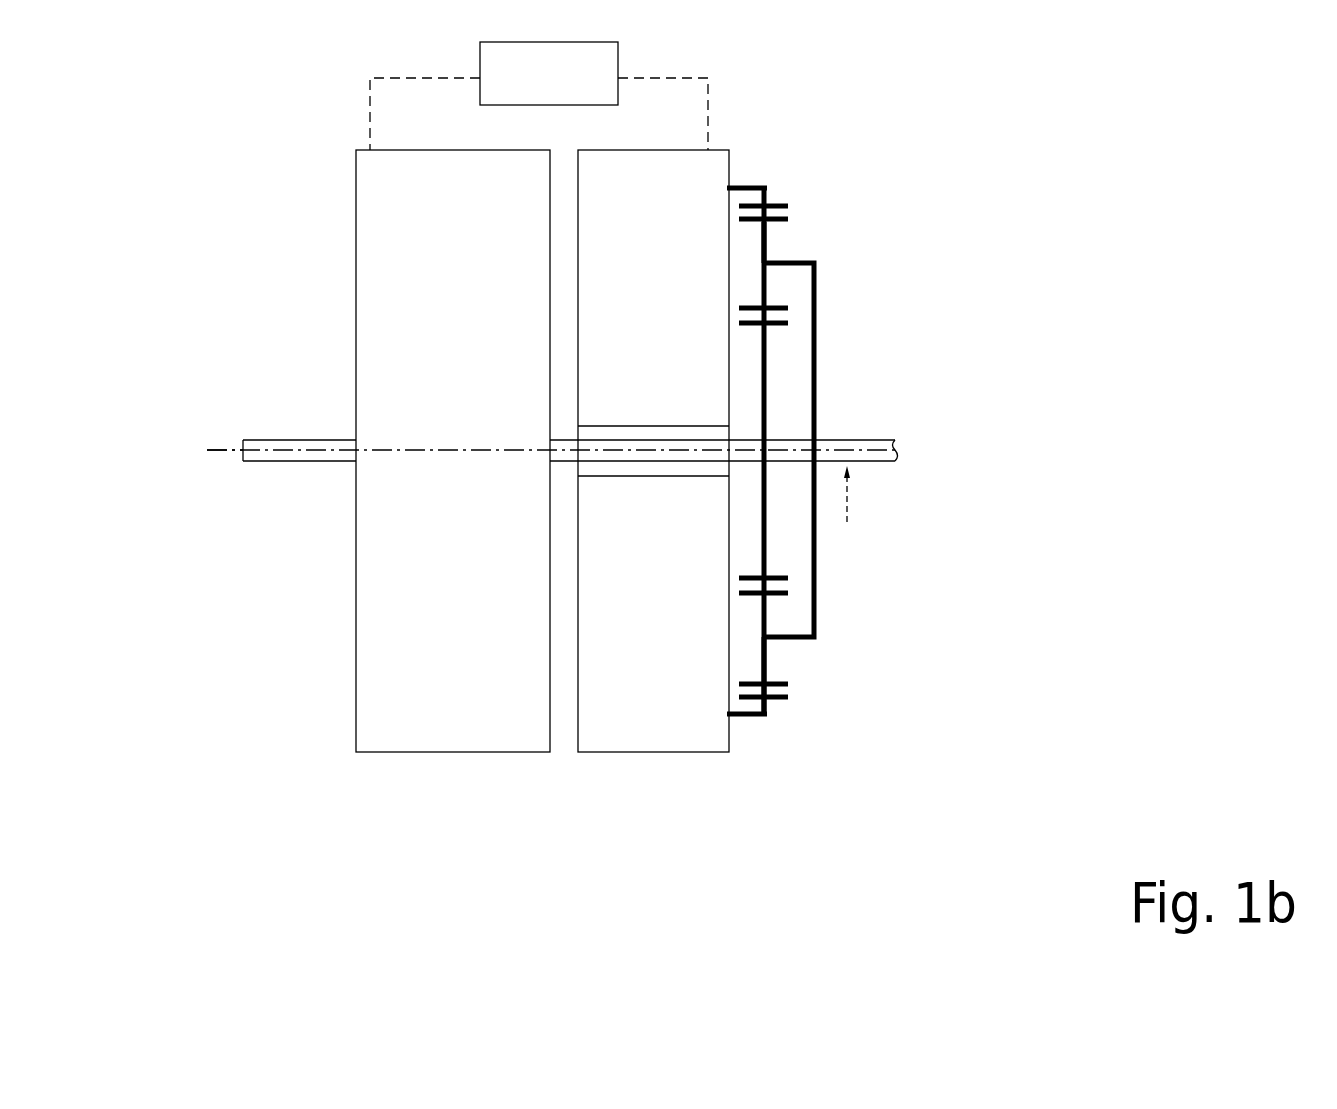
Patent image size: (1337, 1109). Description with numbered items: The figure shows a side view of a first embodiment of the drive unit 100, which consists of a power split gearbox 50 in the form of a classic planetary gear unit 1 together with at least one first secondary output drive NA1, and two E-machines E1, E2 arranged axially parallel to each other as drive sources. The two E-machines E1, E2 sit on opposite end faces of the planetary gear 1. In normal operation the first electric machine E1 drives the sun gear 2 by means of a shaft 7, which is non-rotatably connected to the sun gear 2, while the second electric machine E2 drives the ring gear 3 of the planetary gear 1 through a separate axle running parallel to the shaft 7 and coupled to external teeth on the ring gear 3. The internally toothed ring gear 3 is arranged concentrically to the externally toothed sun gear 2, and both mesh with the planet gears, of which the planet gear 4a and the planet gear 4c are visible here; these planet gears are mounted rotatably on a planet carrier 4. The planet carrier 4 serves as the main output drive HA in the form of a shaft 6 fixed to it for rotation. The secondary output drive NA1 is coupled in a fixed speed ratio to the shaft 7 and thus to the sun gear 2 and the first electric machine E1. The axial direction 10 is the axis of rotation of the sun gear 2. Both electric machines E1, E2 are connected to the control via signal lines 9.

The drive unit 100 is at (568, 385).
The signal lines 9 is at (368, 110).
The first electric machine E1 is at (453, 451).
The second electric machine E2 is at (653, 451).
The axial direction 10 is at (220, 449).
The shaft 7 is at (560, 462).
The first secondary output drive NA1 is at (257, 513).
The planetary gear unit 1 is at (828, 461).
The power split gearbox 50 is at (828, 461).
The sun gear 2 is at (767, 387).
The ring gear 3 is at (767, 193).
The planet gear 4a is at (767, 245).
The planet carrier 4 is at (815, 279).
The planet gear 4c is at (767, 659).
The shaft 6 is at (833, 440).
The main output drive HA is at (847, 508).